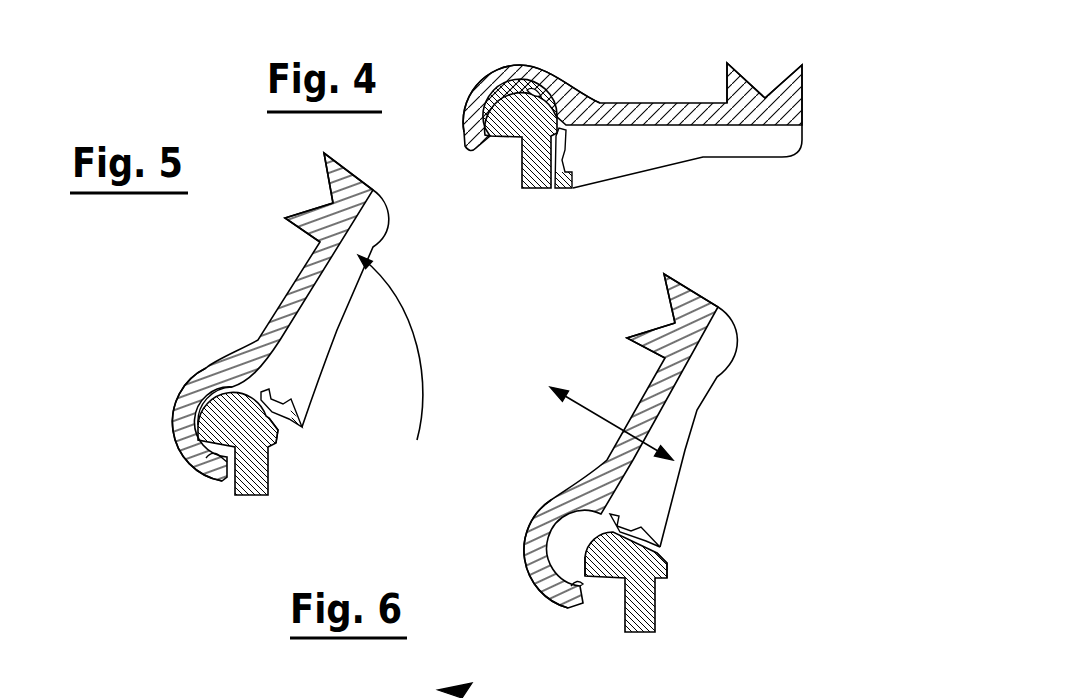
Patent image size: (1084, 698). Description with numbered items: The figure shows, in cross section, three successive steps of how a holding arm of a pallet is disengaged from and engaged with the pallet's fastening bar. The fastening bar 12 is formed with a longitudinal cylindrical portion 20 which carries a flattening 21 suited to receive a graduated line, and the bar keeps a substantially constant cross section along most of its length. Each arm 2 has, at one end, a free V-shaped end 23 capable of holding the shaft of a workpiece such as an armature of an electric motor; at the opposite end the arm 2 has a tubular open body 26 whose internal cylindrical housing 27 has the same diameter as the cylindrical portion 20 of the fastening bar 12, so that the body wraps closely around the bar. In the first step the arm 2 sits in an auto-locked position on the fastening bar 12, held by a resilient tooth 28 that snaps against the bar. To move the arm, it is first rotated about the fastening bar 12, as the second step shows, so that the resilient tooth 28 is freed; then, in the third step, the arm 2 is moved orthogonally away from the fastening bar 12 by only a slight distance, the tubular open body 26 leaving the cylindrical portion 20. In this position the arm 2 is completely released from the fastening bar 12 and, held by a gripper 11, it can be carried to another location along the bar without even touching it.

In FIG. 4, the arm 2 is at (678, 110).
In FIG. 5, the arm 2 is at (272, 315).
In FIG. 6, the arm 2 is at (720, 375).
In FIG. 6, the gripper 11 is at (490, 690).
In FIG. 4, the fastening bar 12 is at (530, 155).
In FIG. 5, the fastening bar 12 is at (270, 478).
In FIG. 6, the fastening bar 12 is at (657, 595).
In FIG. 5, the cylindrical portion 20 is at (200, 405).
In FIG. 6, the cylindrical portion 20 is at (585, 563).
In FIG. 4, the flattening 21 is at (684, 109).
In FIG. 5, the flattening 21 is at (268, 420).
In FIG. 6, the flattening 21 is at (662, 558).
In FIG. 4, the free V-shaped end 23 is at (742, 87).
In FIG. 5, the free V-shaped end 23 is at (303, 217).
In FIG. 6, the free V-shaped end 23 is at (650, 338).
In FIG. 4, the tubular open body 26 is at (502, 72).
In FIG. 5, the tubular open body 26 is at (182, 467).
In FIG. 6, the tubular open body 26 is at (537, 528).
In FIG. 4, the internal cylindrical housing 27 is at (533, 90).
In FIG. 5, the internal cylindrical housing 27 is at (208, 472).
In FIG. 6, the internal cylindrical housing 27 is at (557, 520).
In FIG. 4, the resilient tooth 28 is at (568, 157).
In FIG. 5, the resilient tooth 28 is at (280, 402).
In FIG. 6, the resilient tooth 28 is at (625, 522).